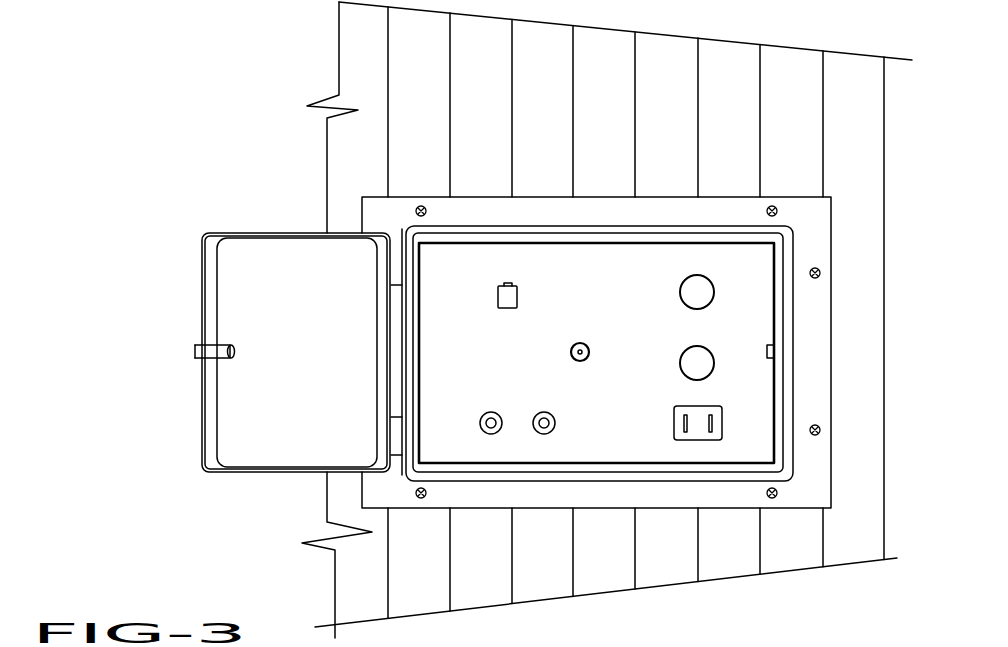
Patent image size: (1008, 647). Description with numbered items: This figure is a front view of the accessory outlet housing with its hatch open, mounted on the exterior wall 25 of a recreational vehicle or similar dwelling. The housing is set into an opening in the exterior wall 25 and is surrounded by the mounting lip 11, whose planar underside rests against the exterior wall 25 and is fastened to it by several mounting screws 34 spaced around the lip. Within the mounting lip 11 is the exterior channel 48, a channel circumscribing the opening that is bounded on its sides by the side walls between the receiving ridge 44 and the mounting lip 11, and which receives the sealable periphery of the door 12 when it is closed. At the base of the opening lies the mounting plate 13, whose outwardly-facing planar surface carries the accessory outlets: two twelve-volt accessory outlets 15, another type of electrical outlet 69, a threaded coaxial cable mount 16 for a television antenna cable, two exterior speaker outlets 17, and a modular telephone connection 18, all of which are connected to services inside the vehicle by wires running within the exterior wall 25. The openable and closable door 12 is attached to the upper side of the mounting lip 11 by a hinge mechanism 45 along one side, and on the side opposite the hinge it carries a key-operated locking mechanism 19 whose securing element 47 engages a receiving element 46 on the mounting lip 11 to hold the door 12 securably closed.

The mounting lip 11 is at (813, 355).
The openable and closable door 12 is at (321, 443).
The mounting plate 13 is at (535, 459).
The twelve-volt accessory outlets 15 is at (690, 283).
The threaded coaxial cable mount 16 is at (571, 345).
The exterior speaker outlets 17 is at (482, 413).
The modular telephone connection 18 is at (518, 298).
The locking mechanism 19 is at (234, 350).
The exterior wall 25 is at (436, 88).
The mounting screw 34 is at (428, 205).
The receiving ridge 44 is at (475, 462).
The hinge mechanism 45 is at (390, 347).
The receiving element 46 is at (768, 345).
The securing element 47 is at (195, 350).
The exterior channel 48 is at (493, 233).
The electrical outlet 69 is at (674, 418).